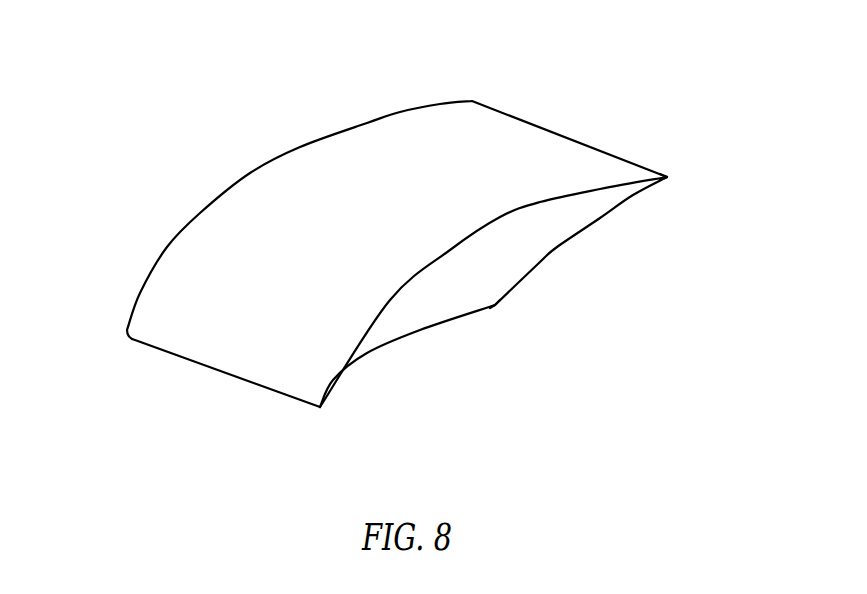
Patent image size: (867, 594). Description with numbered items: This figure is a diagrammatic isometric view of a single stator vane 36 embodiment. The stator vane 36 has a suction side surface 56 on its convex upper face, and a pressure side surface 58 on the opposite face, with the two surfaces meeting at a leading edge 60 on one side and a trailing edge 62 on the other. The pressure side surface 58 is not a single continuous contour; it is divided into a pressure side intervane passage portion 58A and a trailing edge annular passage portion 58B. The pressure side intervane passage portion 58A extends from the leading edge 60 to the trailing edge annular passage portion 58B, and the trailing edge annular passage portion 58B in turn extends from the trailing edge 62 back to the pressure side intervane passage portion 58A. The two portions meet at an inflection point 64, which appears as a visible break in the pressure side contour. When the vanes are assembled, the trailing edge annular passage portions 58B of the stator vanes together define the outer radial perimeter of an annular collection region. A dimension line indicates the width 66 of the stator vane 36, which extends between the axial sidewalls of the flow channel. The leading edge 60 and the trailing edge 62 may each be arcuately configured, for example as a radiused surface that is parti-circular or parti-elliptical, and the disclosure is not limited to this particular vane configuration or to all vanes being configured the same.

The stator vane 36 is at (409, 256).
The suction side surface 56 is at (375, 148).
The pressure side surface 58 is at (510, 300).
The pressure side intervane passage portion 58A is at (420, 330).
The trailing edge annular passage portion 58B is at (557, 247).
The leading edge 60 is at (197, 365).
The trailing edge 62 is at (670, 175).
The inflection point 64 is at (495, 307).
The width 66 is at (320, 412).